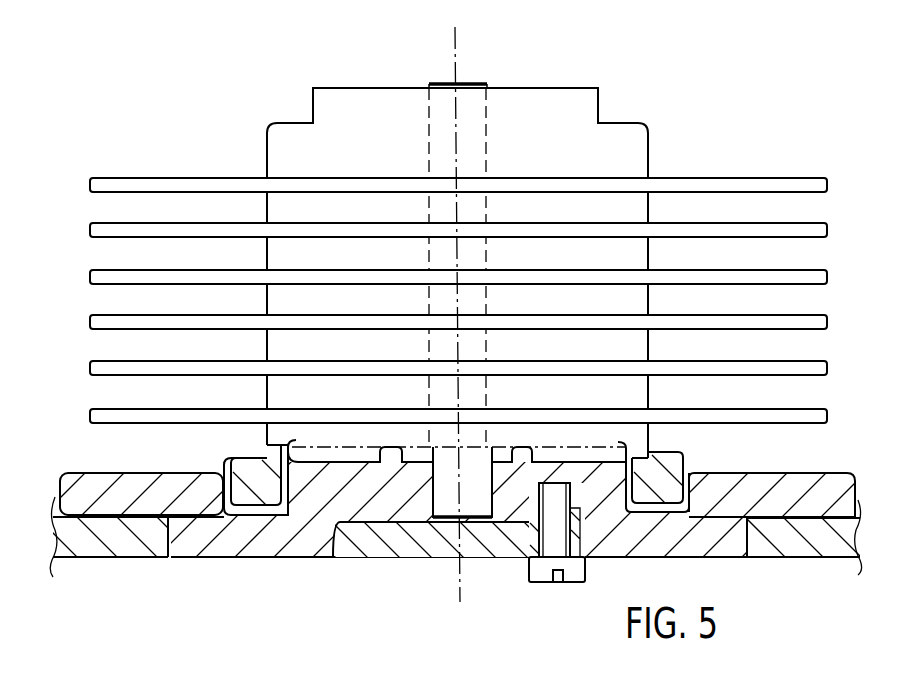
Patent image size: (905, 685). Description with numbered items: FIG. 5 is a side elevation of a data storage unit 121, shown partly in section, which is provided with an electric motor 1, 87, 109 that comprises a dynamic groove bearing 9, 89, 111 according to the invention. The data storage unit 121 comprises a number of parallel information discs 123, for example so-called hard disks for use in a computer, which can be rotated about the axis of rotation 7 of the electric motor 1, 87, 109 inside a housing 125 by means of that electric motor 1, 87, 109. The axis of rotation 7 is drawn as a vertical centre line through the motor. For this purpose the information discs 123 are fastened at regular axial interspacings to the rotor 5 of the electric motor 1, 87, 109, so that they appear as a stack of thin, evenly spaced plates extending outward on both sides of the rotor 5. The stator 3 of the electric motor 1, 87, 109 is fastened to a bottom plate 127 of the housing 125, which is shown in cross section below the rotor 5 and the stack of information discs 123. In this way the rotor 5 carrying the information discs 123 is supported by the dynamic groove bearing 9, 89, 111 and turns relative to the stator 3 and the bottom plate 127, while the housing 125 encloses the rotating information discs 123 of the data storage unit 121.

The electric motor 1 is at (490, 271).
The electric motor 87 is at (490, 271).
The electric motor 109 is at (490, 271).
The rotor 5 is at (293, 150).
The axis of rotation 7 is at (455, 40).
The information discs 123 is at (104, 320).
The data storage unit 121 is at (234, 561).
The bottom plate 127 is at (826, 488).
The housing 125 is at (811, 540).
The stator 3 is at (324, 505).
The dynamic groove bearing 9 is at (458, 524).
The dynamic groove bearing 89 is at (458, 524).
The dynamic groove bearing 111 is at (428, 442).